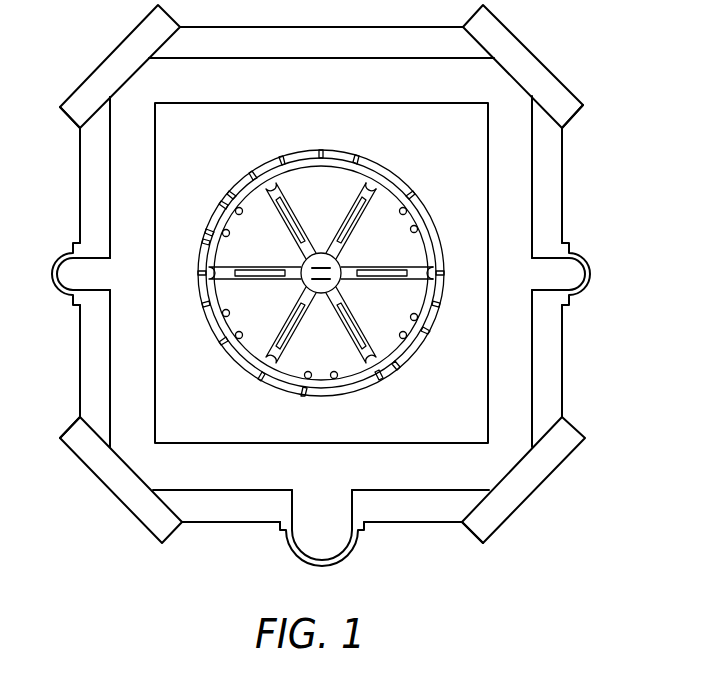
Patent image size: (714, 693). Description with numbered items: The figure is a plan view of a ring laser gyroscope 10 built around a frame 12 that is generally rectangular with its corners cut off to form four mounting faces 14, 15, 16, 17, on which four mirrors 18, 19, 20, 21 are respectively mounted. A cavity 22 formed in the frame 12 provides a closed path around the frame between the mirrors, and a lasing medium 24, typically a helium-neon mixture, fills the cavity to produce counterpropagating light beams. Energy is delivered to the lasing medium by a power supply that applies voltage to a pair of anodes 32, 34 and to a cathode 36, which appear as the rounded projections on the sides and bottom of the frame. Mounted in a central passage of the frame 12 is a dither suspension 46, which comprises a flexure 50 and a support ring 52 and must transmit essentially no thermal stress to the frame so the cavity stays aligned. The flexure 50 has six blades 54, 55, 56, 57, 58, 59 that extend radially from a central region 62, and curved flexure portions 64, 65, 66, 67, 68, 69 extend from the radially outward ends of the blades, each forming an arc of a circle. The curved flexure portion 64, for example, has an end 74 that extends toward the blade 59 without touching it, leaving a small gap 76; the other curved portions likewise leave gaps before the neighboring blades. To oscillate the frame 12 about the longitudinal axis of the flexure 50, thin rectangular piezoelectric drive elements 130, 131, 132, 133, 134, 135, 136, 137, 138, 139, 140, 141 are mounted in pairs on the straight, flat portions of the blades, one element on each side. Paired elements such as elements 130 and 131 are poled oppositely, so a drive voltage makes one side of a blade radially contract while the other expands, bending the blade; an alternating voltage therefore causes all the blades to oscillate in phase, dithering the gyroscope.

The ring laser gyroscope 10 is at (188, 563).
The frame 12 is at (218, 523).
The mounting face 14 is at (96, 438).
The mounting face 15 is at (484, 500).
The mounting face 16 is at (563, 90).
The mounting face 17 is at (88, 108).
The mirror 18 is at (128, 512).
The mirror 19 is at (560, 467).
The mirror 20 is at (519, 36).
The mirror 21 is at (121, 48).
The cavity 22 is at (108, 165).
The lasing medium 24 is at (522, 356).
The anode 32 is at (58, 268).
The anode 34 is at (584, 262).
The cathode 36 is at (350, 549).
The dither suspension 46 is at (407, 168).
The flexure 50 is at (282, 146).
The support ring 52 is at (343, 158).
The blade 54 is at (414, 258).
The blade 55 is at (362, 176).
The blade 56 is at (248, 192).
The blade 57 is at (212, 287).
The blade 58 is at (270, 380).
The blade 59 is at (402, 352).
The central region 62 is at (356, 288).
The curved flexure portion 64 is at (441, 278).
The curved flexure portion 65 is at (416, 207).
The curved flexure portion 66 is at (318, 152).
The curved flexure portion 67 is at (228, 212).
The curved flexure portion 68 is at (228, 340).
The curved flexure portion 69 is at (340, 397).
The end 74 is at (428, 326).
The gap 76 is at (380, 383).
The piezoelectric drive element 130 is at (426, 296).
The piezoelectric drive element 131 is at (432, 230).
The piezoelectric drive element 132 is at (363, 208).
The piezoelectric drive element 133 is at (340, 222).
The piezoelectric drive element 134 is at (262, 170).
The piezoelectric drive element 135 is at (272, 202).
The piezoelectric drive element 136 is at (228, 244).
The piezoelectric drive element 137 is at (222, 318).
The piezoelectric drive element 138 is at (238, 355).
The piezoelectric drive element 139 is at (272, 398).
The piezoelectric drive element 140 is at (305, 392).
The piezoelectric drive element 141 is at (420, 345).